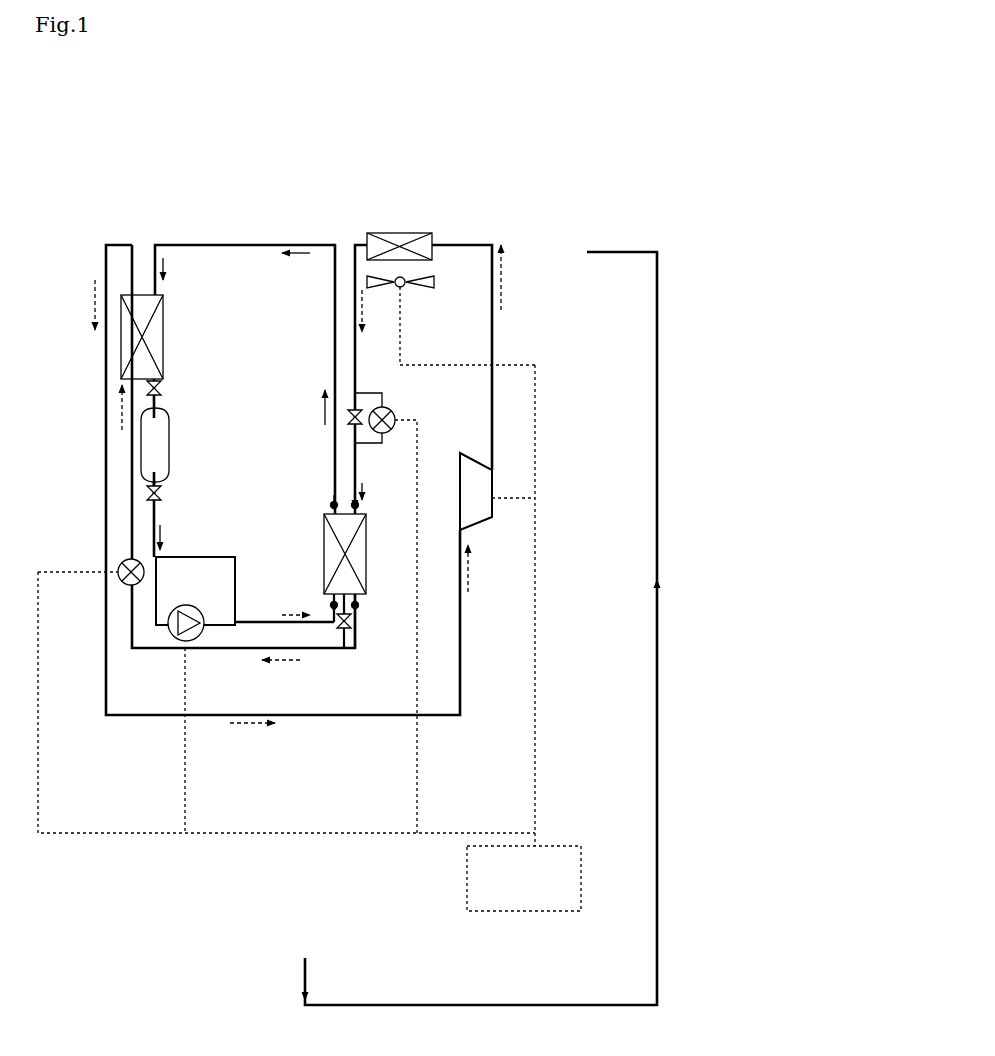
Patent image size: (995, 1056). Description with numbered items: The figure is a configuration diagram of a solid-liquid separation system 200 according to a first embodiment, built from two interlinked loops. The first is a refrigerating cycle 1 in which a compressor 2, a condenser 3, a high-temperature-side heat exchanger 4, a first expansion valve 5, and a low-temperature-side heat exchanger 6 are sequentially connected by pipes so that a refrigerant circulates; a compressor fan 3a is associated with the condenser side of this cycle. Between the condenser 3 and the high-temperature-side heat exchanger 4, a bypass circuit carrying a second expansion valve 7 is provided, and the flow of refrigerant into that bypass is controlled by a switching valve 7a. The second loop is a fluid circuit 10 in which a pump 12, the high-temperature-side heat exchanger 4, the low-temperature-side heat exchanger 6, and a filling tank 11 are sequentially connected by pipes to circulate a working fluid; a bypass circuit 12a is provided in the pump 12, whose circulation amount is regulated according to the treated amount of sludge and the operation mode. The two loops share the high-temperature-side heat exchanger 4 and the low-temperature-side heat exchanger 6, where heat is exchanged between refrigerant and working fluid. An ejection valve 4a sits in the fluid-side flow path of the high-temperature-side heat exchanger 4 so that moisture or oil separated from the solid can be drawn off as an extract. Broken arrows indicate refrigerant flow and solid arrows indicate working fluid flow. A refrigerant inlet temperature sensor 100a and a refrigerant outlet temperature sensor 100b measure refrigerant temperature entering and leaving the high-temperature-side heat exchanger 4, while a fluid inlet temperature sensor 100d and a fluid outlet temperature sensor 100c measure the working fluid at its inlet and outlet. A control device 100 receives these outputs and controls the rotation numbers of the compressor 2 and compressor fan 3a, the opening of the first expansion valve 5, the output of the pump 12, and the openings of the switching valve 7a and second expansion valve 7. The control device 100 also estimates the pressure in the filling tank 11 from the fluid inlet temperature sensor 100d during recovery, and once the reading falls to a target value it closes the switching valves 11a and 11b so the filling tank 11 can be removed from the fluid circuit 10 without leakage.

The solid-liquid separation system 200 is at (262, 174).
The fluid circuit 10 is at (194, 245).
The refrigerating cycle 1 is at (492, 345).
The condenser 3 is at (408, 233).
The compressor fan 3a is at (397, 290).
The compressor 2 is at (492, 472).
The low-temperature-side heat exchanger 6 is at (166, 328).
The switching valve 11a is at (162, 388).
The filling tank 11 is at (169, 435).
The switching valve 11b is at (162, 492).
The bypass circuit 12a is at (203, 556).
The pump 12 is at (180, 606).
The first expansion valve 5 is at (118, 585).
The switching valve 7a is at (350, 430).
The second expansion valve 7 is at (392, 413).
The high-temperature-side heat exchanger 4 is at (368, 556).
The ejection valve 4a is at (342, 632).
The refrigerant inlet temperature sensor 100a is at (358, 500).
The refrigerant outlet temperature sensor 100b is at (358, 610).
The fluid outlet temperature sensor 100c is at (332, 500).
The fluid inlet temperature sensor 100d is at (330, 600).
The control device 100 is at (498, 911).